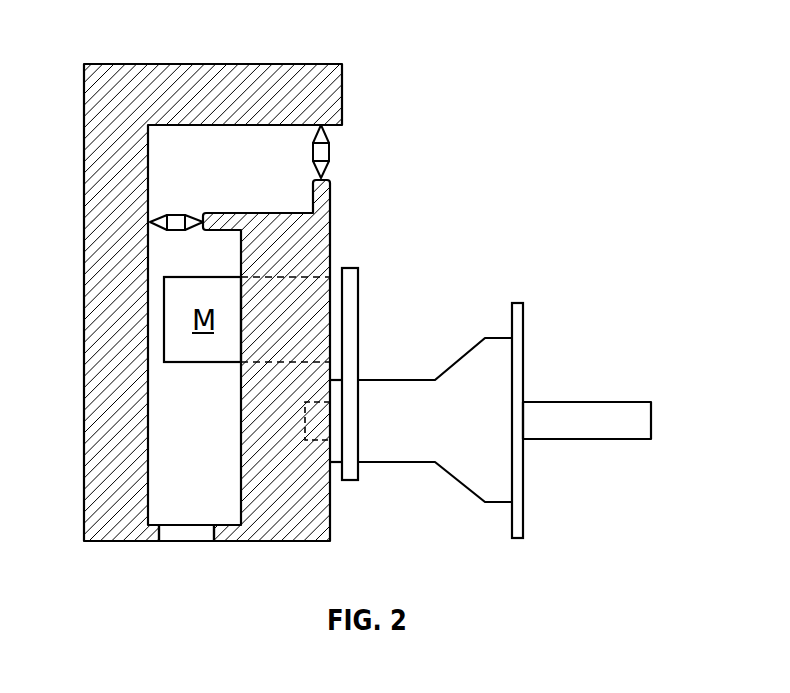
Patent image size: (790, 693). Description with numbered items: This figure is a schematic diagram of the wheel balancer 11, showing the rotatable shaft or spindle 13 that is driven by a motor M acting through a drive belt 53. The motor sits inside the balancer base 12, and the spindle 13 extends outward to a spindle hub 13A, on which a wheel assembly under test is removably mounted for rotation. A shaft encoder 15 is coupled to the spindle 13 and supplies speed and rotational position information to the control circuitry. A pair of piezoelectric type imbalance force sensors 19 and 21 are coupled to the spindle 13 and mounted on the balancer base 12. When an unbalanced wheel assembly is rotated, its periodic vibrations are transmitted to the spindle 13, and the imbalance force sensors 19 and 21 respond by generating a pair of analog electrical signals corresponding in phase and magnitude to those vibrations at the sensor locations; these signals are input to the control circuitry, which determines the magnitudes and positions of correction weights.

The wheel balancer 11 is at (358, 93).
The balancer base 12 is at (137, 542).
The shaft or spindle 13 is at (585, 400).
The spindle hub 13A is at (525, 523).
The shaft encoder 15 is at (313, 443).
The imbalance force sensor 19 is at (173, 213).
The imbalance force sensor 21 is at (330, 152).
The drive belt 53 is at (359, 293).